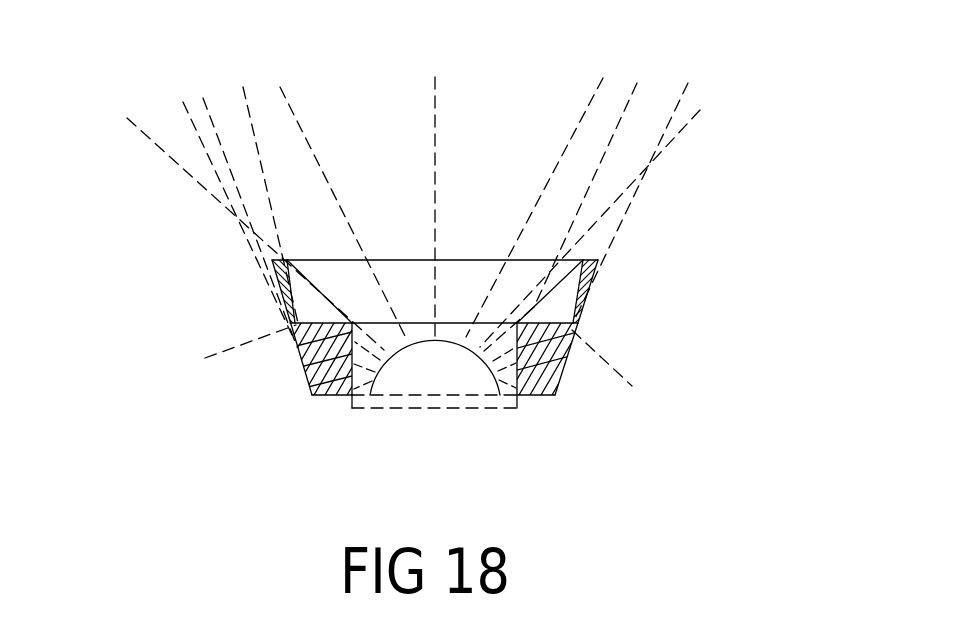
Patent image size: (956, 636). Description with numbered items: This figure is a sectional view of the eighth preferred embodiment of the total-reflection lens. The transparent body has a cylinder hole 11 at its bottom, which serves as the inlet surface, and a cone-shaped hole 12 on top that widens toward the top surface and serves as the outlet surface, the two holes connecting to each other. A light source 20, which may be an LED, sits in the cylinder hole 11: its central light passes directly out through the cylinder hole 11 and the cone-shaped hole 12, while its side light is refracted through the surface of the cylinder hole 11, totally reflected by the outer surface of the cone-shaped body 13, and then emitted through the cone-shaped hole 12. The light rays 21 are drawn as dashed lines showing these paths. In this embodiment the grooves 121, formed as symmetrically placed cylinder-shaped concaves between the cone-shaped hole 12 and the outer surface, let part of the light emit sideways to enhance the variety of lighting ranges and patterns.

The cylinder hole 11 is at (563, 363).
The cone-shaped hole 12 is at (417, 288).
The grooves 121 is at (298, 291).
The outer surface of the cone-shaped body 13 is at (307, 385).
The light source 20 is at (422, 345).
The light rays 21 is at (578, 125).